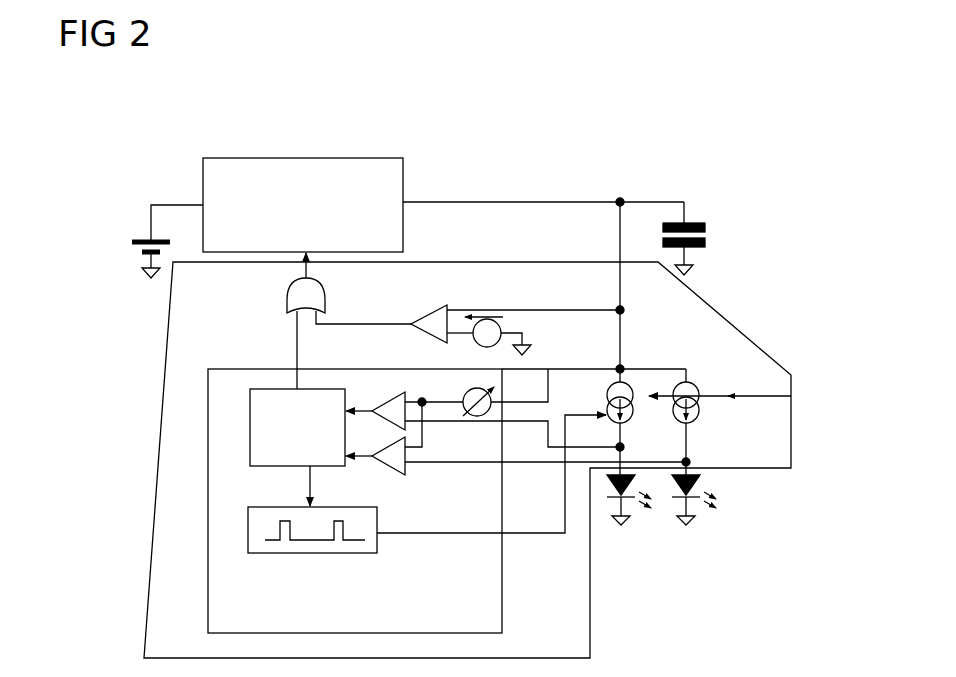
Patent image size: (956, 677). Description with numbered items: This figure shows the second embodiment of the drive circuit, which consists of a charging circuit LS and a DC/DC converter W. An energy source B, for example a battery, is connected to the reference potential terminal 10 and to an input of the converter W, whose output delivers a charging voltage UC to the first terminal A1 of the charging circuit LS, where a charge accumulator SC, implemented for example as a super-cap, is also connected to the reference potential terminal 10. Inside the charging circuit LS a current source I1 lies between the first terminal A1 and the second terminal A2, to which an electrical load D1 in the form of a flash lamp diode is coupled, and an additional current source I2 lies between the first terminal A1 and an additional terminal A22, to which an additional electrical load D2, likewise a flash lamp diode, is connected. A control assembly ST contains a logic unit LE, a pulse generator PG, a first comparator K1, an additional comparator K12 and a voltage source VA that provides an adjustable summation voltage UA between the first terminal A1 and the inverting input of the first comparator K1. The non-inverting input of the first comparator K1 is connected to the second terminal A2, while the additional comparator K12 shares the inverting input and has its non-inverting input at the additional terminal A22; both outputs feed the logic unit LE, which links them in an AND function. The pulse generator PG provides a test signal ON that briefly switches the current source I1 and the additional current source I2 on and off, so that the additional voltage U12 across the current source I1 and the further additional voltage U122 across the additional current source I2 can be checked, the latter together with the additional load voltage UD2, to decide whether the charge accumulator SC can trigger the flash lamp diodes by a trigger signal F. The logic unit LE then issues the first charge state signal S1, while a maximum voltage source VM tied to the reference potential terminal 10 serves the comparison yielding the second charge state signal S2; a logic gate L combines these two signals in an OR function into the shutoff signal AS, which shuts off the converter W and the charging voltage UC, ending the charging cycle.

The DC/DC converter W is at (352, 158).
The energy source B is at (128, 243).
The reference potential terminal 10 is at (148, 282).
The charging voltage UC is at (572, 208).
The charge accumulator SC is at (690, 222).
The charging circuit LS is at (748, 338).
The control assembly ST is at (208, 500).
The maximum voltage source VM is at (515, 336).
The logic gate L is at (287, 300).
The shutoff signal AS is at (309, 268).
The first charge state signal S1 is at (297, 338).
The second charge state signal S2 is at (320, 325).
The logic unit LE is at (250, 420).
The first comparator K1 is at (396, 391).
The additional comparator K12 is at (380, 475).
The voltage source VA is at (476, 392).
The summation voltage UA is at (464, 381).
The pulse generator PG is at (248, 553).
The first terminal A1 is at (623, 366).
The second terminal A2 is at (616, 446).
The additional terminal A22 is at (690, 462).
The test signal ON is at (658, 430).
The current source I1 is at (609, 386).
The additional current source I2 is at (697, 384).
The additional voltage U12 is at (643, 382).
The further additional voltage U122 is at (727, 378).
The trigger signal F is at (650, 396).
The electrical load D1 is at (604, 477).
The additional electrical load D2 is at (669, 477).
The additional load voltage UD2 is at (728, 483).